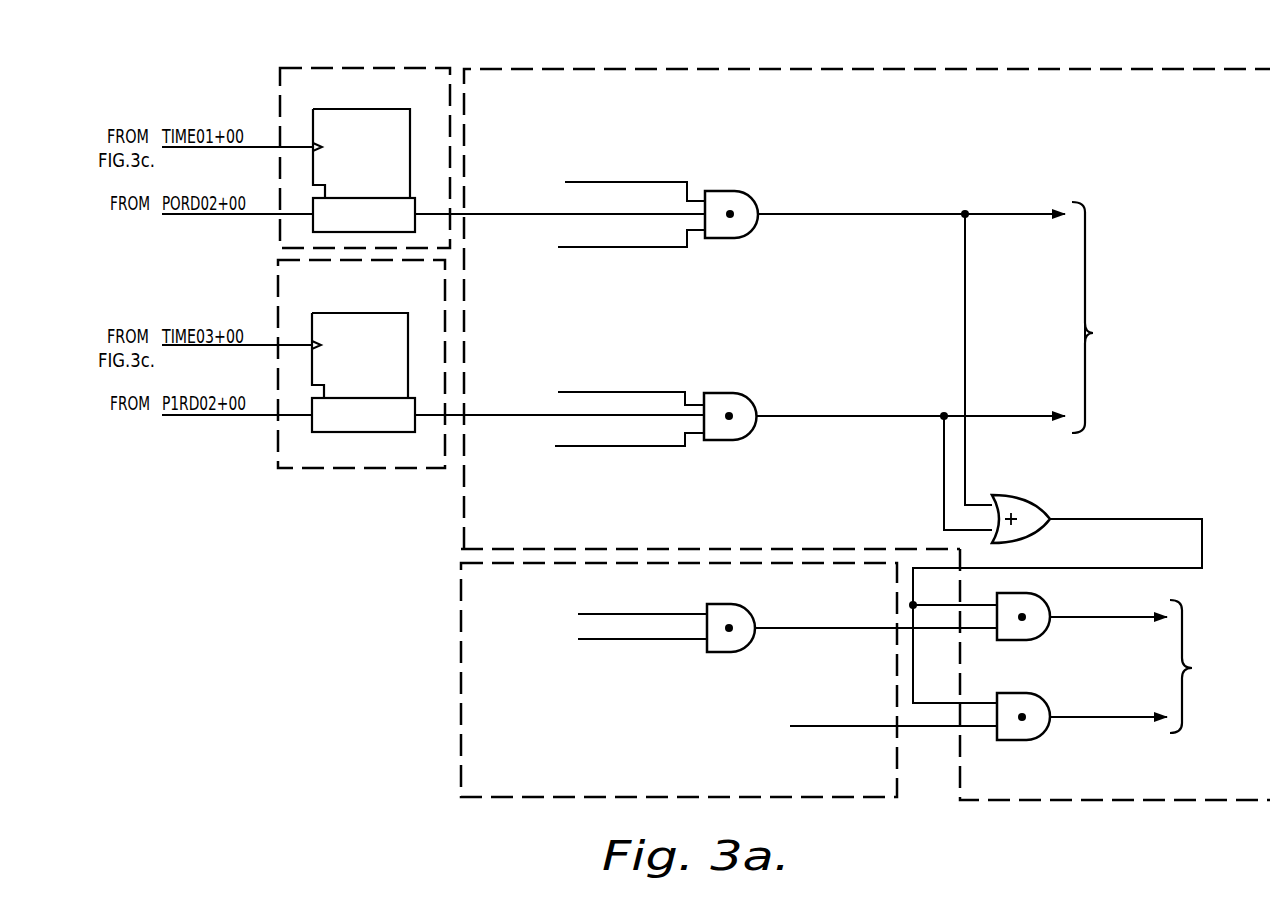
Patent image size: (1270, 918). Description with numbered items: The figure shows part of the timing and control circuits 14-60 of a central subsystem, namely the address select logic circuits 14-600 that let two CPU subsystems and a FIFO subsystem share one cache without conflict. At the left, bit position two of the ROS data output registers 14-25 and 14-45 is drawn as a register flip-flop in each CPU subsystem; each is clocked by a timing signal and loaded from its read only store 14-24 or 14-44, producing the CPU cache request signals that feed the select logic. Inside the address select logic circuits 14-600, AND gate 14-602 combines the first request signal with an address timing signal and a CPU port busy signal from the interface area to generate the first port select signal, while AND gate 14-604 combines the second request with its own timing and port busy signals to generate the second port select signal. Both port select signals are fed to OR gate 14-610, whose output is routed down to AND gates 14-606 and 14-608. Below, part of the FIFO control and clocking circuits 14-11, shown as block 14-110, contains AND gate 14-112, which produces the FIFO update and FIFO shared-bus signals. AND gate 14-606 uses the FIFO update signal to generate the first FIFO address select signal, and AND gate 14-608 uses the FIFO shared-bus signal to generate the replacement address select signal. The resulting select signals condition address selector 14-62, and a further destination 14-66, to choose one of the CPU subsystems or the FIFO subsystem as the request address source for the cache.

The ROS data output register 14-25 is at (387, 67).
The ROS data output register 14-45 is at (382, 469).
The address select logic circuits 14-600 is at (795, 105).
The timing and control circuits 14-60 is at (1150, 111).
The AND gate 14-602 is at (727, 190).
The AND gate 14-604 is at (723, 393).
The OR gate 14-610 is at (1030, 479).
The AND gate 14-606 is at (1045, 637).
The AND gate 14-608 is at (1035, 740).
The AND gate 14-112 is at (745, 648).
The FIFO control logic block 14-110 is at (632, 718).
The FIFO control and clocking circuits 14-11 is at (729, 680).
The address selector 14-62 is at (1171, 467).
The destination unit 14-66 is at (1128, 336).
The read only store 14-24 is at (210, 223).
The read only store 14-44 is at (210, 423).